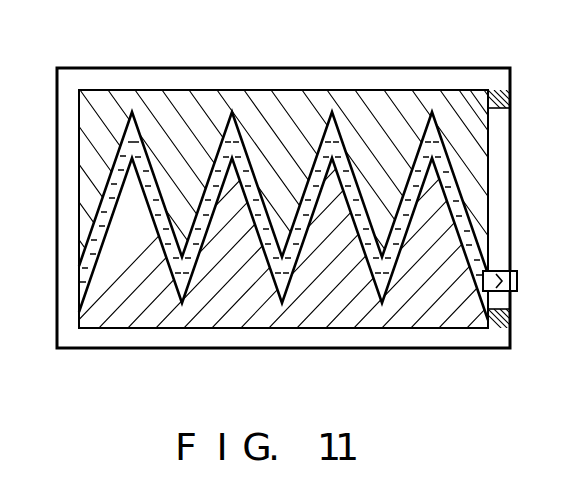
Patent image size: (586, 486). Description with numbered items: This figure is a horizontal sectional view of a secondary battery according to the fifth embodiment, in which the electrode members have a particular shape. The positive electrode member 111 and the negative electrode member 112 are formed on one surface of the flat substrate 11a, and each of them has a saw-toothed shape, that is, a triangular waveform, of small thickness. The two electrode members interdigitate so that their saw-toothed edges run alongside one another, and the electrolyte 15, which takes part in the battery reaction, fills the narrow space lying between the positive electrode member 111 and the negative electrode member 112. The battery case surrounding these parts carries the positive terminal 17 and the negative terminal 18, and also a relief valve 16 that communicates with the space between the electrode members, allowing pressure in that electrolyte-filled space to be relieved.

The flat substrate 11a is at (128, 82).
The positive electrode member 111 is at (418, 110).
The negative electrode member 112 is at (432, 318).
The electrolyte 15 is at (86, 265).
The relief valve 16 is at (518, 275).
The positive terminal 17 is at (506, 98).
The negative terminal 18 is at (512, 316).